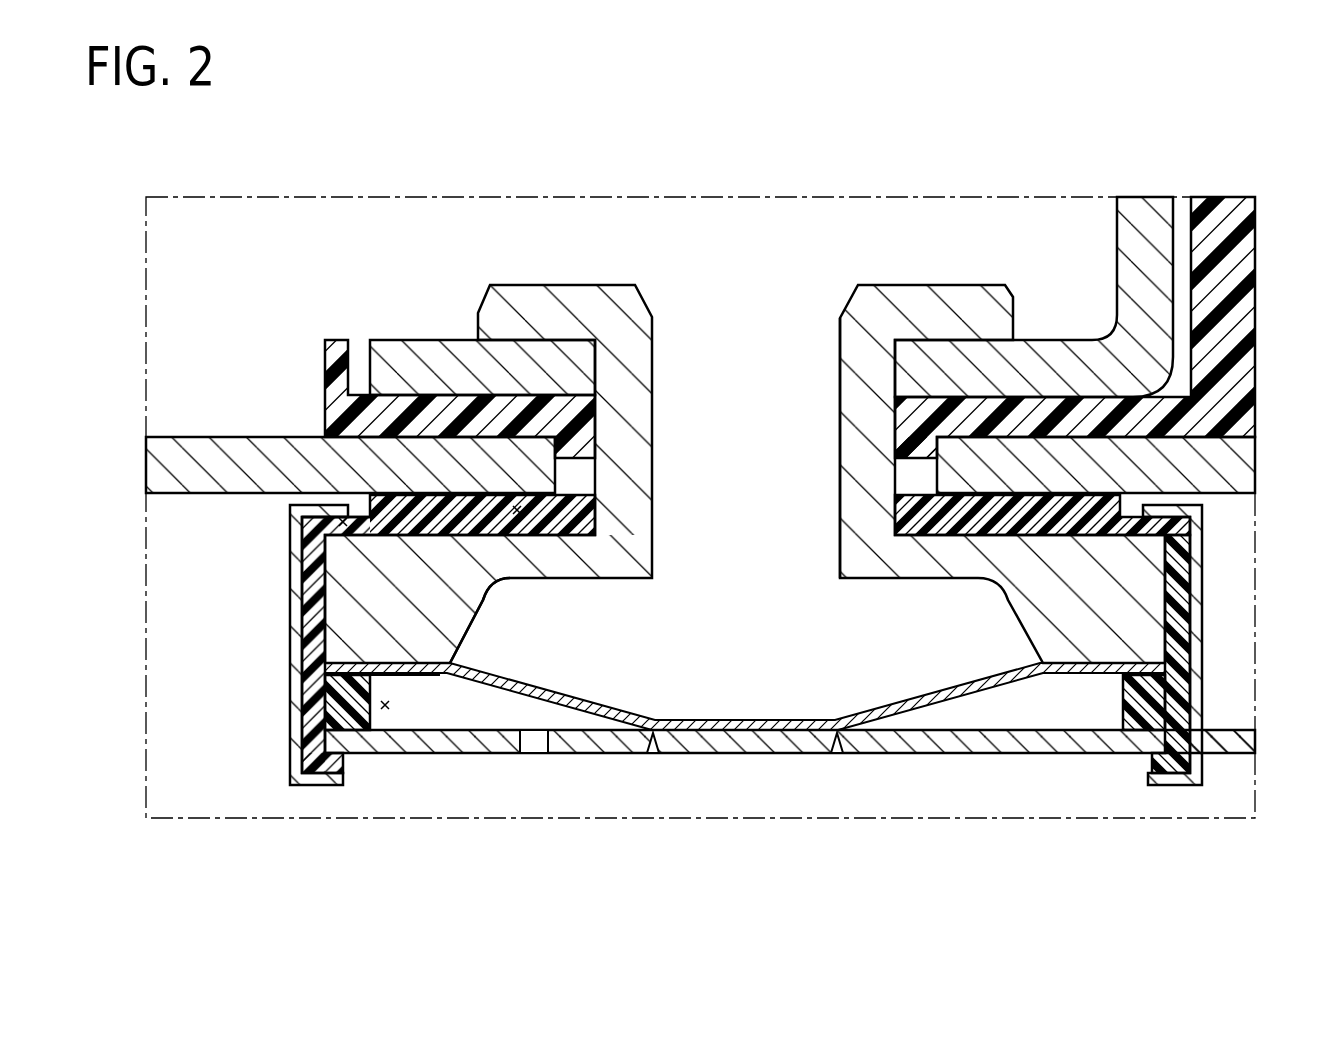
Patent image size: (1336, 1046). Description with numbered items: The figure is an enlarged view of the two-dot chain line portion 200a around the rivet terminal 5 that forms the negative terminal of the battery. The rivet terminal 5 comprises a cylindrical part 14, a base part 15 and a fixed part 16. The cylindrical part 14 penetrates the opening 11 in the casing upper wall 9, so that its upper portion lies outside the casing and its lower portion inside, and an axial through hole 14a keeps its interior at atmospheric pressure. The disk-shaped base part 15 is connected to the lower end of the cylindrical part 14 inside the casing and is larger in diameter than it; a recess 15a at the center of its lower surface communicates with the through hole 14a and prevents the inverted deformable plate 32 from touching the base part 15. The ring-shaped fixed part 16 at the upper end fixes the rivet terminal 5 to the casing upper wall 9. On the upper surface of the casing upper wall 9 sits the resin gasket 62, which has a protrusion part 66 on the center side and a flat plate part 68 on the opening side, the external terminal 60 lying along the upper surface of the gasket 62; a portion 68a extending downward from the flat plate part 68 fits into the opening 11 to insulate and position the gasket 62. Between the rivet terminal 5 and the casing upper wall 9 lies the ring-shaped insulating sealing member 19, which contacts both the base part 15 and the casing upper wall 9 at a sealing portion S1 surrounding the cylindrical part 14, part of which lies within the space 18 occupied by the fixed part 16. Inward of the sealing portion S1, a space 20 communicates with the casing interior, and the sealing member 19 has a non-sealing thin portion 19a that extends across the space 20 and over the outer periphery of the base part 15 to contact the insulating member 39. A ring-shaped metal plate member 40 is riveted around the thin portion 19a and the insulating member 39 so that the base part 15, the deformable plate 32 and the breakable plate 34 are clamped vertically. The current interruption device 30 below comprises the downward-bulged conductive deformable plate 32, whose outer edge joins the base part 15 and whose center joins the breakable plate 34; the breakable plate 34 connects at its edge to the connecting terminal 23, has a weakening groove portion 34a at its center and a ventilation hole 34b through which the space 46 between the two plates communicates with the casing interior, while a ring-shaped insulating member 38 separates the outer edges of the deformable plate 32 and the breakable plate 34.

The two-dot chain line portion 200a is at (278, 197).
The rivet terminal 5 is at (590, 145).
The casing upper wall 9 is at (233, 447).
The opening 11 is at (933, 447).
The cylindrical part 14 is at (623, 375).
The through hole 14a is at (838, 388).
The base part 15 is at (393, 562).
The recess 15a is at (475, 603).
The fixed part 16 is at (537, 297).
The space 18 is at (517, 520).
The sealing member 19 is at (1007, 522).
The thin portion 19a is at (1147, 523).
The space 20 is at (345, 525).
The connecting terminal 23 is at (1236, 748).
The current interruption device 30 is at (1207, 712).
The deformable plate 32 is at (915, 700).
The breakable plate 34 is at (474, 742).
The groove portion 34a is at (652, 742).
The ventilation hole 34b is at (535, 742).
The insulating member 38 is at (325, 710).
The insulating member 39 is at (323, 765).
The plate member 40 is at (297, 685).
The space 46 is at (385, 708).
The sealing portion S1 is at (420, 700).
The external terminal 60 is at (1155, 327).
The gasket 62 is at (1137, 148).
The protrusion part 66 is at (1190, 200).
The flat plate part 68 is at (1043, 405).
The portion extending downward 68a is at (916, 447).